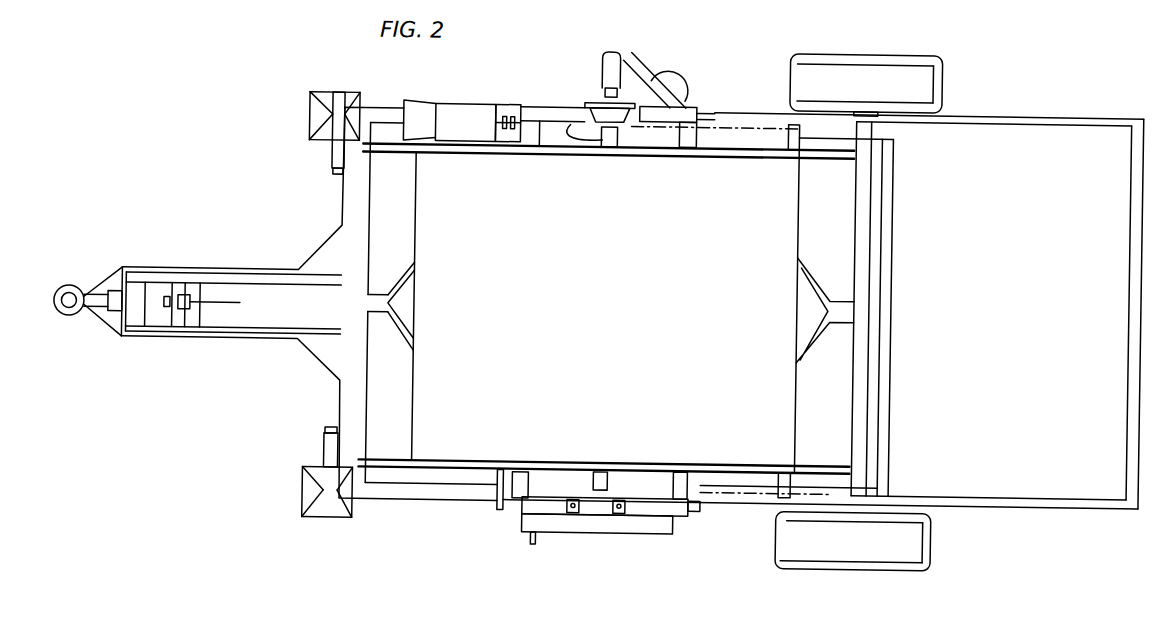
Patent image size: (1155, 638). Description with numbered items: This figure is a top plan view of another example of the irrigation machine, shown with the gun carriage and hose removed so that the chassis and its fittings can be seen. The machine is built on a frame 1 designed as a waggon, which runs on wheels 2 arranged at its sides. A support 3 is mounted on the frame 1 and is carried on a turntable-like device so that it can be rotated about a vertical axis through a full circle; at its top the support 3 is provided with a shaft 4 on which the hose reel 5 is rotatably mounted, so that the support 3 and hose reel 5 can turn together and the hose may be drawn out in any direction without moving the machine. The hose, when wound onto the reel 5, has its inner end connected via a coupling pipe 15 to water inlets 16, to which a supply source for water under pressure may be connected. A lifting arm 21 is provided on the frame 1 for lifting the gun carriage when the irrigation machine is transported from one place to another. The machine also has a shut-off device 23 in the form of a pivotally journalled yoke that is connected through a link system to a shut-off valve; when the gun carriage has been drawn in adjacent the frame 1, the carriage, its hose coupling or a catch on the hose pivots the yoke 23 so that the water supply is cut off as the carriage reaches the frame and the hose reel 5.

The frame 1 is at (317, 257).
The wheels 2 is at (929, 68).
The support 3 is at (518, 502).
The shaft 4 is at (568, 125).
The hose reel 5 is at (500, 440).
The coupling pipe 15 is at (597, 98).
The water inlets 16 is at (684, 78).
The lifting arm 21 is at (1011, 114).
The shut-off device 23 is at (889, 398).